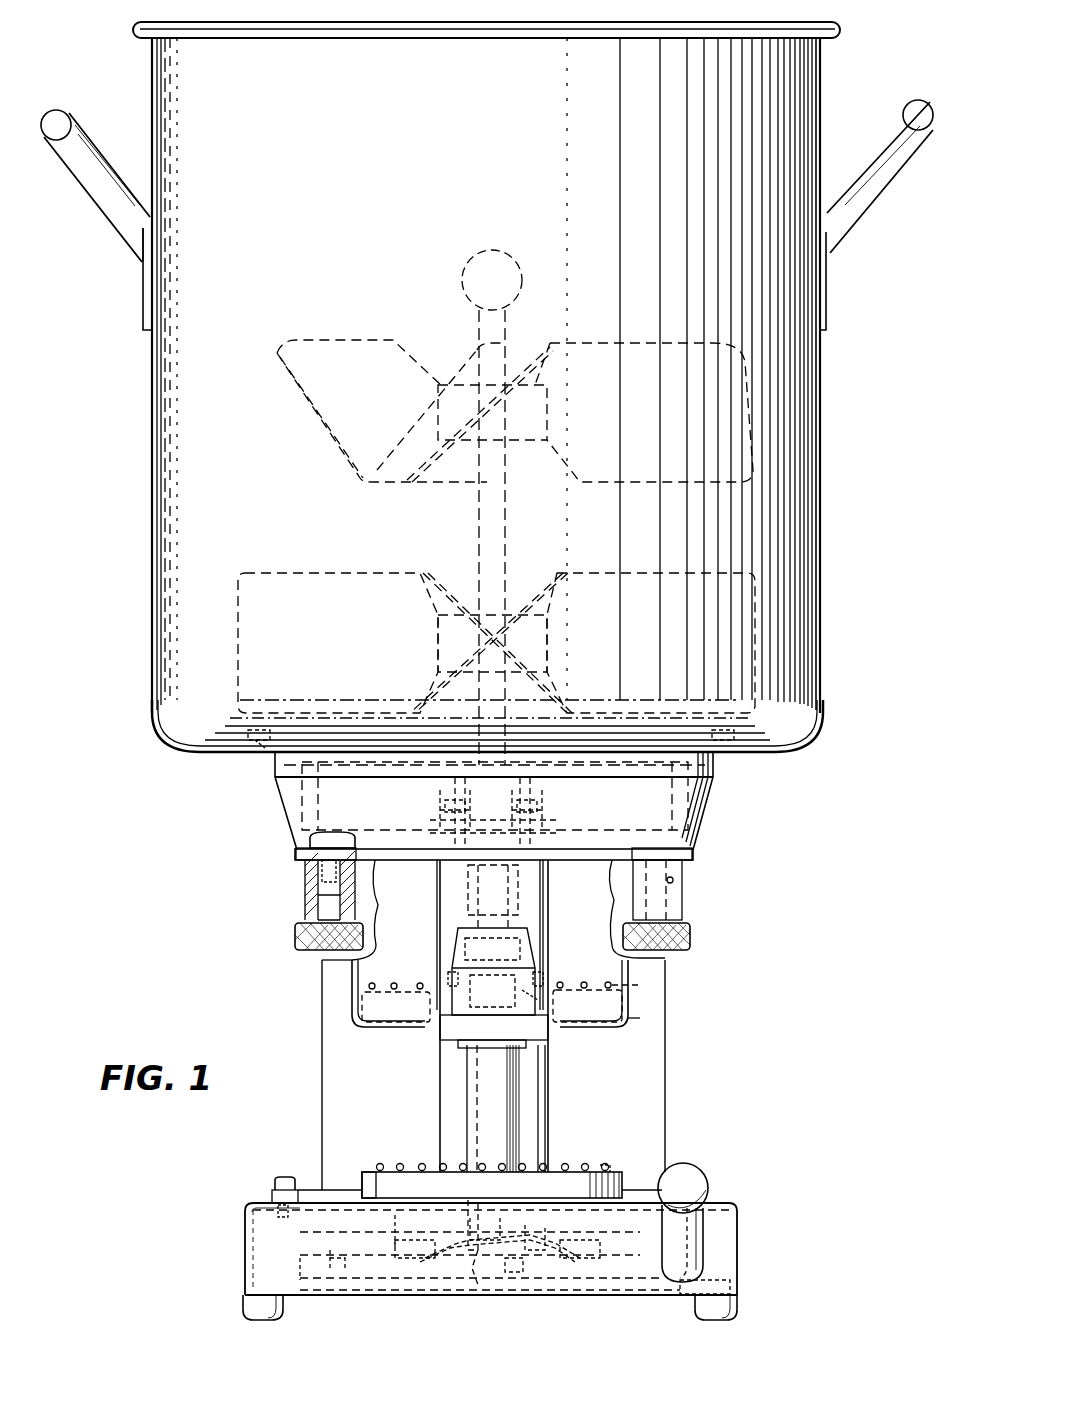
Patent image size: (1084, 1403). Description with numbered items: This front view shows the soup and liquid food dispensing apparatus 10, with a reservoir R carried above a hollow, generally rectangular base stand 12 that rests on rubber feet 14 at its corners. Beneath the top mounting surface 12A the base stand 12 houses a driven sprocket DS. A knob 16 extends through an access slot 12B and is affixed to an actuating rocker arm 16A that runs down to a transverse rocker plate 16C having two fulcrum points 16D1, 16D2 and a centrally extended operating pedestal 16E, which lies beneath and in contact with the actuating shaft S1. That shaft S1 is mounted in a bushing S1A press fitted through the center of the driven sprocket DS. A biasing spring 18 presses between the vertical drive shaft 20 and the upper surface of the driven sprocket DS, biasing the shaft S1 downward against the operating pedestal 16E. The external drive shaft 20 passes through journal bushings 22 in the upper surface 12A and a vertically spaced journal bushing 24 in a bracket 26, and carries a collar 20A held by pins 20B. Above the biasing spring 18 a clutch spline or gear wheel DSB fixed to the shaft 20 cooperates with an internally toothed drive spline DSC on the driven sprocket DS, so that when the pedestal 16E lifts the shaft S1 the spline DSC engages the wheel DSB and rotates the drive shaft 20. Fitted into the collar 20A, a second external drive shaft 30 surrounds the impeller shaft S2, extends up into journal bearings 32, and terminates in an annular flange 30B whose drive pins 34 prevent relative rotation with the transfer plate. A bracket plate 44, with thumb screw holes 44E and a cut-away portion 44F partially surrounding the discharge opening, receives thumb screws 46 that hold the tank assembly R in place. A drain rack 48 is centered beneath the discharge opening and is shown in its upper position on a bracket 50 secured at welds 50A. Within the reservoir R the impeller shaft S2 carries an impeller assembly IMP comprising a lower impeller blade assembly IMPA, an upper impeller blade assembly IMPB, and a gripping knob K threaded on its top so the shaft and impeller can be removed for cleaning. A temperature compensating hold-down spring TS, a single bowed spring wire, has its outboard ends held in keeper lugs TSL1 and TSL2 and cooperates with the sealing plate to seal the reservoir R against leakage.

The reservoir R is at (828, 464).
The soup and liquid food dispensing apparatus 10 is at (918, 538).
The gripping knob K is at (524, 270).
The impeller shaft S2 is at (508, 548).
The impeller assembly IMP is at (496, 503).
The upper impeller blade assembly IMPB is at (378, 340).
The lower impeller blade assembly IMPA is at (386, 583).
The temperature compensating hold-down spring TS is at (623, 718).
The keeper lug TSL1 is at (250, 738).
The keeper lug TSL2 is at (735, 738).
The bracket plate 44 is at (500, 856).
The support flange 44E is at (298, 854).
The cut-away portion 44F is at (376, 862).
The thumb screws 46 is at (297, 936).
The drive pins 34 is at (440, 788).
The annular flange 30B is at (536, 812).
The journal bearings 32 is at (530, 846).
The second external drive shaft 30 is at (546, 946).
The vertical drive shaft 20 is at (467, 1116).
The pins 20B is at (452, 982).
The collar 20A is at (532, 994).
The journal bushing 24 is at (455, 1010).
The bracket 26 is at (445, 1046).
The bracket 50 is at (352, 1016).
The welds 50A is at (636, 1018).
The drain rack 48 is at (640, 972).
The actuating shaft S1 is at (500, 1122).
The journal bushings 22 is at (512, 1222).
The base stand 12 is at (522, 1233).
The top mounting surface 12A is at (722, 1205).
The access slot 12B is at (705, 1238).
The rubber feet 14 is at (282, 1312).
The knob 16 is at (688, 1236).
The actuating rocker arm 16A is at (678, 1282).
The transverse rocker plate 16C is at (388, 1295).
The fulcrum point 16D1 is at (248, 1290).
The fulcrum point 16D2 is at (735, 1290).
The operating pedestal 16E is at (502, 1310).
The biasing spring 18 is at (555, 1265).
The driven sprocket DS is at (580, 1268).
The clutch spline DSB is at (585, 1223).
The internally toothed drive spline DSC is at (590, 1246).
The bushing S1A is at (516, 1272).